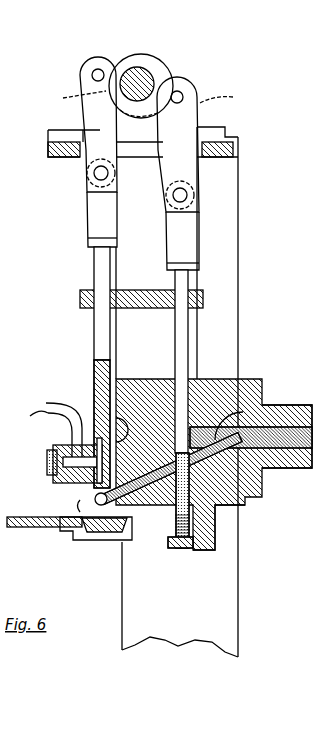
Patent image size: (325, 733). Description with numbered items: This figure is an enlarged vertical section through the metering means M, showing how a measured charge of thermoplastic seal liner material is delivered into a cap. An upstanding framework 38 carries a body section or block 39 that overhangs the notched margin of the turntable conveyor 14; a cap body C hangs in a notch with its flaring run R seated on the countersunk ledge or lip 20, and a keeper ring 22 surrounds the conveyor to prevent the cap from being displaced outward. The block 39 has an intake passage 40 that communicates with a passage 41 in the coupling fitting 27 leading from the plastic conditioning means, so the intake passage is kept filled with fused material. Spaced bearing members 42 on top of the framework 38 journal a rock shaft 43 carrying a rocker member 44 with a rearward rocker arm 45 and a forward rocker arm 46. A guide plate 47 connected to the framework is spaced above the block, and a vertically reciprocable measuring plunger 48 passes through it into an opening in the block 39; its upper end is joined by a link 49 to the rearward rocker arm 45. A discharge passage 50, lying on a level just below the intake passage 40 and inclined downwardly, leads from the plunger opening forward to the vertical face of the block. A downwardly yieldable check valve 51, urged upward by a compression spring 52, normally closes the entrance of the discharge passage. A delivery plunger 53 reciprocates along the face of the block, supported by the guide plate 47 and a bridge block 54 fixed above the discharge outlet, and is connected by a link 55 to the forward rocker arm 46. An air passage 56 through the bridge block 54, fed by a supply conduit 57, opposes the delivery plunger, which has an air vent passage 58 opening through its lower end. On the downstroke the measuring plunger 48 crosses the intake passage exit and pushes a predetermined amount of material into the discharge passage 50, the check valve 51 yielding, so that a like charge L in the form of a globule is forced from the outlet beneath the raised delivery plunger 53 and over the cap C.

The rocker member 44 is at (144, 54).
The rock shaft 43 is at (152, 74).
The bearing members 42 is at (96, 152).
The forward rocker arm 46 is at (81, 87).
The link 55 is at (75, 128).
The rearward rocker arm 45 is at (204, 144).
The link 49 is at (185, 171).
The framework 38 is at (222, 227).
The body section or block 39 is at (206, 378).
The delivery plunger 53 is at (94, 268).
The guide plate 47 is at (145, 290).
The measuring plunger 48 is at (175, 333).
The metering means M is at (226, 371).
The intake passage 40 is at (258, 395).
The coupling fitting 27 is at (282, 410).
The passage 41 is at (280, 470).
The discharge passage 50 is at (160, 505).
The check valve 51 is at (217, 515).
The compression spring 52 is at (217, 535).
The air vent passage 58 is at (96, 415).
The supply conduit 57 is at (54, 407).
The bridge block 54 is at (58, 440).
The air passage 56 is at (45, 478).
The turntable conveyor 14 is at (30, 517).
The flaring run R is at (83, 515).
The charge L is at (103, 497).
The ledge or lip 20 is at (75, 531).
The cap body C is at (100, 541).
The keeper ring 22 is at (134, 541).